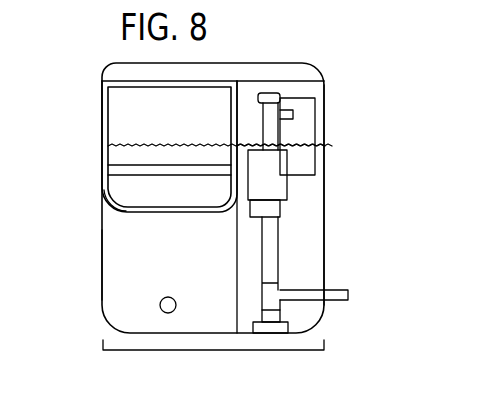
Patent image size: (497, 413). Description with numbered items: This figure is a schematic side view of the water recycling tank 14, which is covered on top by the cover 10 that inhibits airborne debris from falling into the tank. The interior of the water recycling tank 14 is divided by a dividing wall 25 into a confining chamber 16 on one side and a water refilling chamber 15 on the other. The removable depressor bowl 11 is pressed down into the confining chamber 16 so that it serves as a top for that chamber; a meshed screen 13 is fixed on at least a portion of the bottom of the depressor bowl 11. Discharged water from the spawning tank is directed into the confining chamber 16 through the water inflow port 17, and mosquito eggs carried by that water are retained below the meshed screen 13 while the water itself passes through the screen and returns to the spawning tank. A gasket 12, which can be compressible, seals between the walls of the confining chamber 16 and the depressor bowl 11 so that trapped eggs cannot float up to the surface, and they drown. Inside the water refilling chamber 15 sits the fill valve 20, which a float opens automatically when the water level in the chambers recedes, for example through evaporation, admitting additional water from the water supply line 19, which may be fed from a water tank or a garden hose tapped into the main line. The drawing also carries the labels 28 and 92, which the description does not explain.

The cover 10 is at (305, 71).
The depressor bowl 11 is at (128, 109).
The gasket 12 is at (102, 168).
The meshed screen 13 is at (115, 212).
The water recycling tank 14 is at (222, 350).
The water refilling chamber 15 is at (300, 225).
The confining chamber 16 is at (123, 248).
The water inflow port 17 is at (160, 304).
The water supply line 19 is at (277, 301).
The fill valve 20 is at (277, 163).
The dividing wall 25 is at (236, 263).
The water level 28 is at (237, 153).
The water level line 92 is at (102, 148).